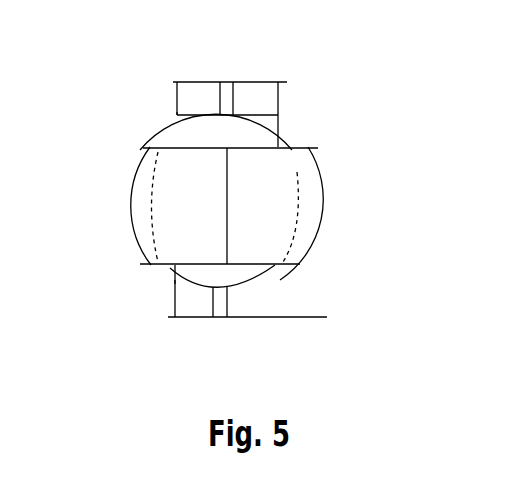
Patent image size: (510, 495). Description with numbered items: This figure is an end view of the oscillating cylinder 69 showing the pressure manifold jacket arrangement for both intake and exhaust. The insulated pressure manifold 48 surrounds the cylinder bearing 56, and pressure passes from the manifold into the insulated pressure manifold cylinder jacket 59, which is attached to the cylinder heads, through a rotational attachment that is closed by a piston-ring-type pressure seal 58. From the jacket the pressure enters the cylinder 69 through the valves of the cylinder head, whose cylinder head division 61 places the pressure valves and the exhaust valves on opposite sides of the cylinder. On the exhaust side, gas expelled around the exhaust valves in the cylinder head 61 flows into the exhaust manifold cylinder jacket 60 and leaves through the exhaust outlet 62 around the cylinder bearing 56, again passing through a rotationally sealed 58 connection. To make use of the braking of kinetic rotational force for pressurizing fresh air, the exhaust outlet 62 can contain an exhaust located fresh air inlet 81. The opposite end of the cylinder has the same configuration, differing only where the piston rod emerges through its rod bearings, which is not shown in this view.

The insulated pressure manifold 48 is at (303, 297).
The cylinder bearing 56 is at (232, 82).
The pressure seal 58 is at (177, 112).
The insulated pressure manifold cylinder jacket 59 is at (320, 202).
The exhaust manifold cylinder jacket 60 is at (133, 193).
The cylinder head division 61 is at (227, 212).
The exhaust outlet 62 is at (210, 80).
The oscillating cylinder 69 is at (147, 218).
The exhaust located fresh air inlet 81 is at (263, 78).